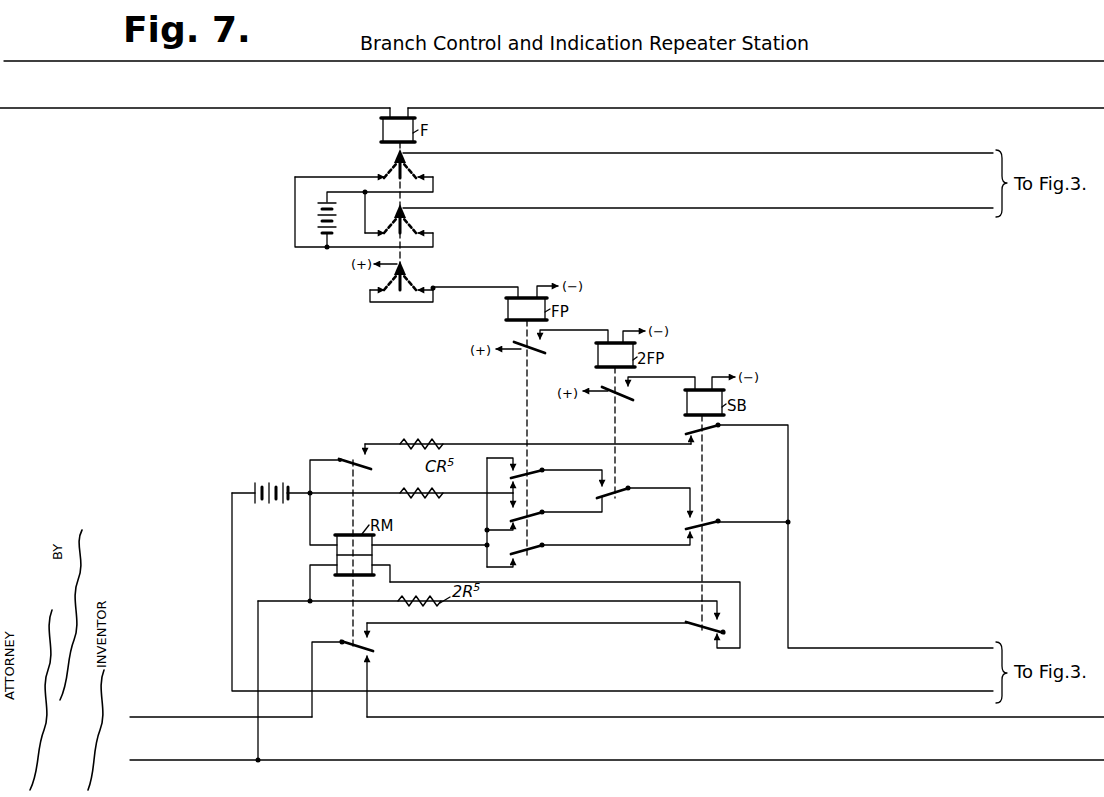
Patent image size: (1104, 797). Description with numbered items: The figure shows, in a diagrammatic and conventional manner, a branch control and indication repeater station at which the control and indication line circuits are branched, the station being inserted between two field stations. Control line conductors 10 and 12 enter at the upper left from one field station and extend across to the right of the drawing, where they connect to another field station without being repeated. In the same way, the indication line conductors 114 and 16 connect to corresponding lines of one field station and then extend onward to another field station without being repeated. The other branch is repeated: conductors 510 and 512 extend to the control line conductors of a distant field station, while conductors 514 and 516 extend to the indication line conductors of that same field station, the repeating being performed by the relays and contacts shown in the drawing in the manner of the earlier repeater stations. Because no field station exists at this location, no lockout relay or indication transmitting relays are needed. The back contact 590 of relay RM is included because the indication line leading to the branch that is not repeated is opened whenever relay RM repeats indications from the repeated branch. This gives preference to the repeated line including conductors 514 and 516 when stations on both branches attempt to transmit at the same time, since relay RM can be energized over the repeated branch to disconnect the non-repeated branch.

The control line conductor 12 is at (17, 63).
The control line conductor 10 is at (15, 110).
The repeated control line conductor 512 is at (938, 150).
The repeated control line conductor 510 is at (938, 204).
The repeated indication line conductor 514 is at (943, 641).
The repeated indication line conductor 516 is at (943, 684).
The back contact of relay RM 590 is at (342, 670).
The indication line conductor 114 is at (158, 713).
The indication line conductor 16 is at (158, 756).